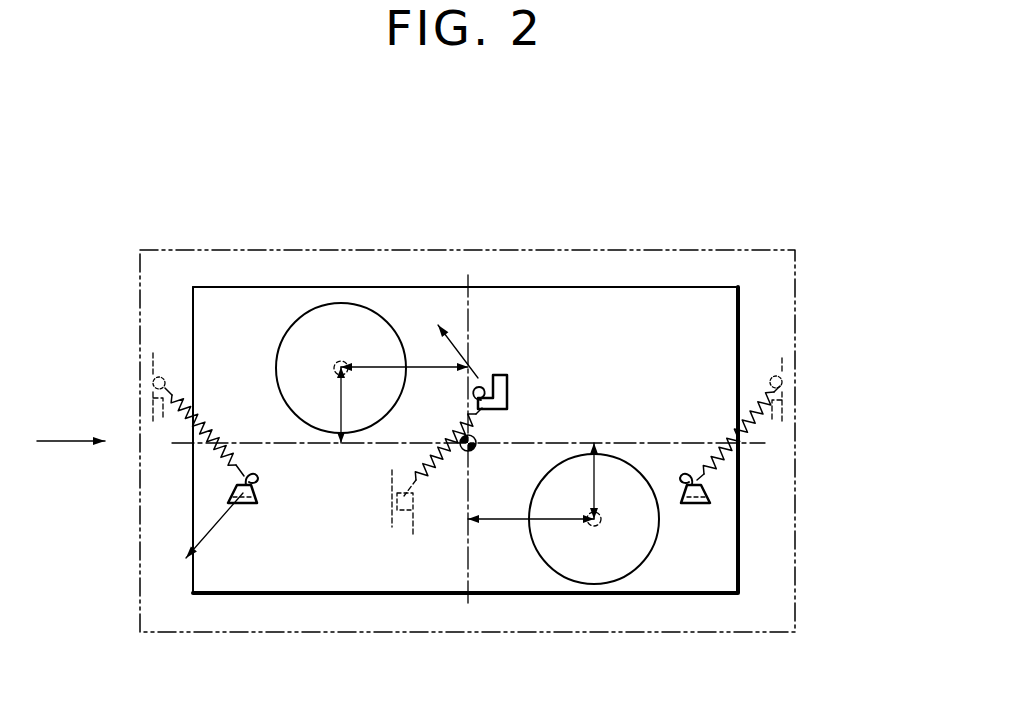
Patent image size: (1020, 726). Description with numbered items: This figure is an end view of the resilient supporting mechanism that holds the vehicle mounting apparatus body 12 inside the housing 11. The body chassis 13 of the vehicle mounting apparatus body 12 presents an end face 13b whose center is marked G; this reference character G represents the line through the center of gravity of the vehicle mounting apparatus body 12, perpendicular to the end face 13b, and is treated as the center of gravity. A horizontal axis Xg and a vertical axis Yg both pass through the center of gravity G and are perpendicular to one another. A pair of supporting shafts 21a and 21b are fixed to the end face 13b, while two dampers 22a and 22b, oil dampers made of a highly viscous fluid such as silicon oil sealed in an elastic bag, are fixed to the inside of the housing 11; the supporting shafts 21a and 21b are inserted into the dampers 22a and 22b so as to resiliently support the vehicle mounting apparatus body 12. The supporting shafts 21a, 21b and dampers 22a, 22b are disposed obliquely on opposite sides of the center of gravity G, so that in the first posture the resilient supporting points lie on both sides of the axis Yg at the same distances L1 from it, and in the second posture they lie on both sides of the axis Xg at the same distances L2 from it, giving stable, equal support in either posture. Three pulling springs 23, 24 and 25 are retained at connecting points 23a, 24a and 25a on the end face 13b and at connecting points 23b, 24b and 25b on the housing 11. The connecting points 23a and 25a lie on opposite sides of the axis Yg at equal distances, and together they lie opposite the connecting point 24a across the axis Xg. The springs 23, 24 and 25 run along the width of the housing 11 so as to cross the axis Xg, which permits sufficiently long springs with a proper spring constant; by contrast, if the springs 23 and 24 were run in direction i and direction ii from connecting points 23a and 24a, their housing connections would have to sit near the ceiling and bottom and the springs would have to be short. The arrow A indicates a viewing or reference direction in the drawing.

The housing 11 is at (660, 249).
The vehicle mounting apparatus body 12 is at (588, 287).
The body chassis 13 is at (523, 297).
The end face 13b is at (727, 312).
The supporting shaft 21a is at (342, 360).
The supporting shaft 21b is at (594, 528).
The damper 22a is at (303, 308).
The damper 22b is at (652, 558).
The pulling spring 23 is at (232, 462).
The connecting point 23a is at (240, 487).
The connecting point 23b is at (152, 382).
The pulling spring 24 is at (430, 463).
The connecting point 24a is at (509, 388).
The connecting point 24b is at (429, 526).
The pulling spring 25 is at (722, 462).
The connecting point 25a is at (715, 492).
The connecting point 25b is at (784, 379).
The center of gravity G is at (465, 449).
The axis Xg is at (758, 448).
The axis Yg is at (468, 602).
The distance L1 is at (467, 446).
The distance L2 is at (484, 443).
The direction A is at (71, 427).
The direction i is at (448, 342).
The direction ii is at (212, 533).